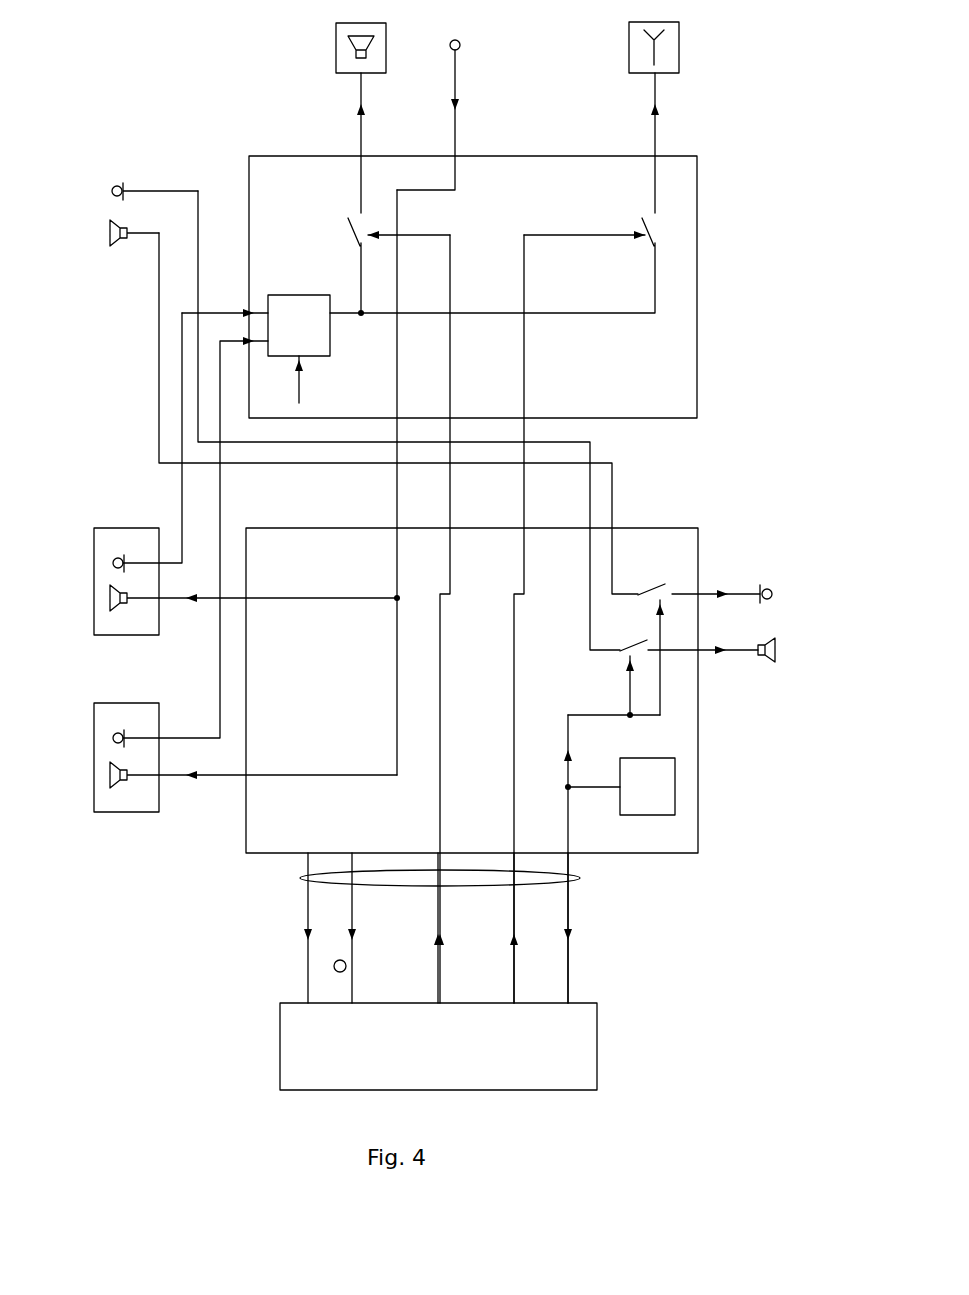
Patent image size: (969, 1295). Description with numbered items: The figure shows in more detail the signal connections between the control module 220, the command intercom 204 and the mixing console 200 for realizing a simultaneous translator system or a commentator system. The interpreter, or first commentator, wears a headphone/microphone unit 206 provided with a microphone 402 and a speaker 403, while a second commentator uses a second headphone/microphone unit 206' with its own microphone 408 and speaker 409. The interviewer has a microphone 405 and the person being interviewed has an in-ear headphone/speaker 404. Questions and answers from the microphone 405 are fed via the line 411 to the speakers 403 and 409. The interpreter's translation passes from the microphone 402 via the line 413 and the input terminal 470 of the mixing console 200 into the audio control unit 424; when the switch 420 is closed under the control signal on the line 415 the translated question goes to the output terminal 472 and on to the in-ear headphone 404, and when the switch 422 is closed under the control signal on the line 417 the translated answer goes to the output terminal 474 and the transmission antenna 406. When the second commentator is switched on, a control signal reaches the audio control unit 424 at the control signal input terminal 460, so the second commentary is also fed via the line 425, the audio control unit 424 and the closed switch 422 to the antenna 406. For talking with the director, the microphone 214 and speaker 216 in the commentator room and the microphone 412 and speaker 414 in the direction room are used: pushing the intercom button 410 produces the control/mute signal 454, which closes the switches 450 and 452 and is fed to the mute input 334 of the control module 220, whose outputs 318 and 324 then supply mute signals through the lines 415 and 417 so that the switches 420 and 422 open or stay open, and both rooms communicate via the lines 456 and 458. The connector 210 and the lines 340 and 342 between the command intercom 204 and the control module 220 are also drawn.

The mixing console 200 is at (697, 283).
The command intercom 204 is at (698, 787).
The headphone/microphone unit 206 is at (89, 601).
The second headphone/microphone unit 206' is at (89, 776).
The connector 210 is at (580, 878).
The microphone 214 is at (767, 585).
The speaker 216 is at (768, 662).
The control module 220 is at (597, 1052).
The output 318 is at (438, 1003).
The output 324 is at (514, 1003).
The mute input 334 is at (568, 1003).
The power line 340 is at (308, 1003).
The power return line 342 is at (352, 1003).
The microphone 402 is at (94, 563).
The speaker 403 is at (94, 598).
The in-ear headphone/speaker 404 is at (336, 38).
The microphone 405 is at (460, 43).
The transmission antenna 406 is at (679, 48).
The microphone 408 is at (94, 738).
The speaker 409 is at (94, 775).
The intercom button INT 410 is at (668, 758).
The line 411 is at (397, 482).
The microphone 412 is at (117, 183).
The line 413 is at (182, 485).
The speaker 414 is at (117, 246).
The line 415 is at (450, 398).
The line 417 is at (524, 378).
The switch 420 is at (356, 230).
The switch 422 is at (656, 224).
The audio control unit 424 is at (326, 295).
The line 425 is at (220, 647).
The switch 450 is at (652, 590).
The switch 452 is at (632, 646).
The control/mute signal 454 is at (568, 770).
The line 456 is at (612, 484).
The line 458 is at (590, 442).
The control signal input terminal 460 is at (299, 403).
The input terminal 470 is at (249, 312).
The output terminal 472 is at (361, 156).
The output terminal 474 is at (655, 156).